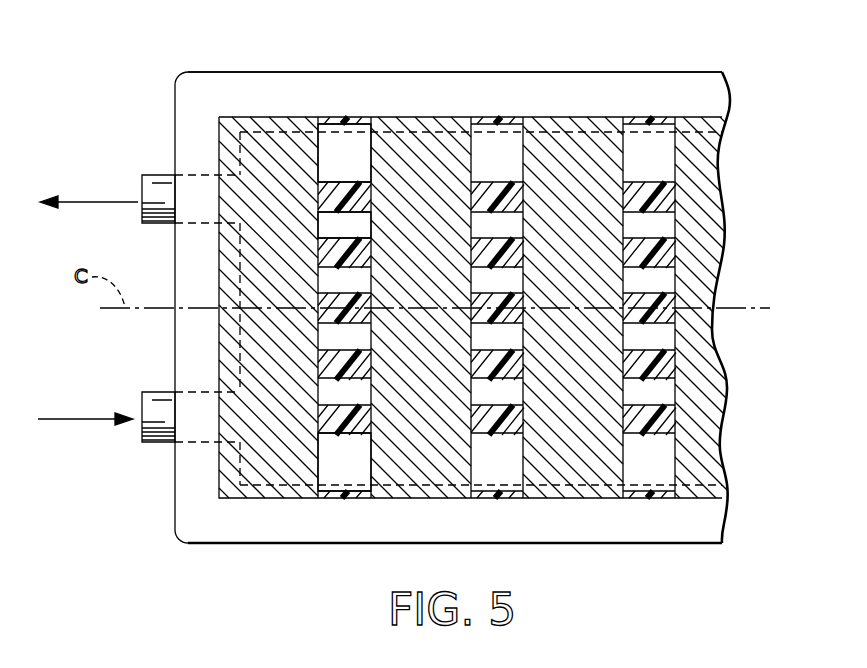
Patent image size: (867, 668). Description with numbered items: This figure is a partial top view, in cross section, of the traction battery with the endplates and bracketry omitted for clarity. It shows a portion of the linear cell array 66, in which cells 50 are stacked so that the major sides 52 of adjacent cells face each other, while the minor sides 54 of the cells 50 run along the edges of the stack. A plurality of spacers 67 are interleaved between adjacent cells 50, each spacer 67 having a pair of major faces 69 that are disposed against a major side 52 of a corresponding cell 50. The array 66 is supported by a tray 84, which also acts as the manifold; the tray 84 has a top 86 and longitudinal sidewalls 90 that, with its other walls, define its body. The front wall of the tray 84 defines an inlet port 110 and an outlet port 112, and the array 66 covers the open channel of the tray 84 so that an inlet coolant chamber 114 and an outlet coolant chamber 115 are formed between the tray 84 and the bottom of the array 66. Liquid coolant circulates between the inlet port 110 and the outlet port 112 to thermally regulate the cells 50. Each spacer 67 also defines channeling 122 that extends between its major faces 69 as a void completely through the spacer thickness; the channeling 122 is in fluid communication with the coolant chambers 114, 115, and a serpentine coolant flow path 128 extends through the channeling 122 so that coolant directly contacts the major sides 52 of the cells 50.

The cell 50 is at (435, 232).
The major side 52 is at (370, 155).
The minor side 54 is at (415, 117).
The cell array 66 is at (561, 106).
The spacer 67 is at (372, 200).
The major face 69 is at (318, 225).
The tray 84 is at (223, 90).
The top 86 is at (268, 104).
The longitudinal sidewall 90 is at (325, 72).
The inlet port 110 is at (162, 175).
The outlet port 112 is at (162, 445).
The inlet coolant chamber 114 is at (331, 465).
The outlet coolant chamber 115 is at (330, 167).
The channeling 122 is at (367, 232).
The coolant flow path 128 is at (367, 384).